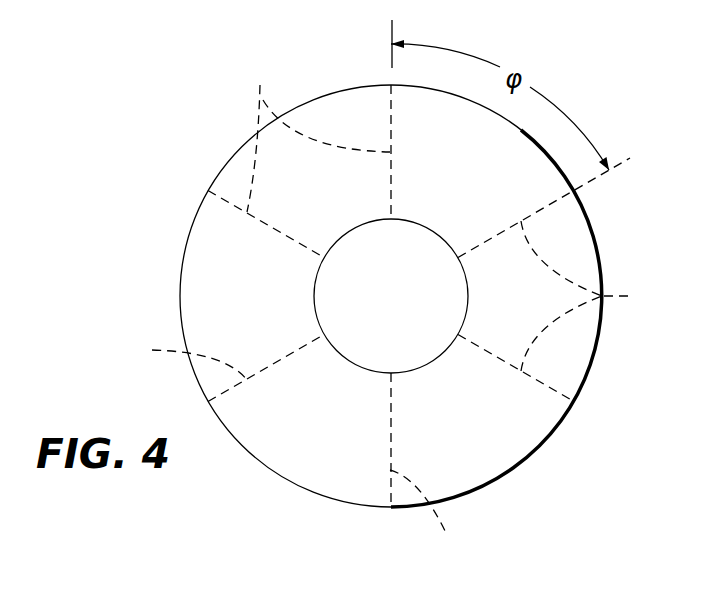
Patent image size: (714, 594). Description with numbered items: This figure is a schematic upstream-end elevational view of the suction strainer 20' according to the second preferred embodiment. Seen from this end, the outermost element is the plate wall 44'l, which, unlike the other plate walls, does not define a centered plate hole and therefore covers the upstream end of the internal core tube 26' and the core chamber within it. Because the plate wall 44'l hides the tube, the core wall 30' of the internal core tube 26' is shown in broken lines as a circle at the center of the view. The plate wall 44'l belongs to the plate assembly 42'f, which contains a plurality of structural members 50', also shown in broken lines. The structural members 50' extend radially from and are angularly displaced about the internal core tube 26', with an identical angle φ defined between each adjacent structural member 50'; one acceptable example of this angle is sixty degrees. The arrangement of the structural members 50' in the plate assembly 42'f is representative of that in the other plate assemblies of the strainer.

The suction strainer 20' is at (361, 253).
The plate assembly 42'f is at (517, 318).
The plate wall 44'l is at (374, 296).
The internal core tube 26' is at (344, 377).
The core wall 30' is at (344, 377).
The structural members 50' is at (393, 304).